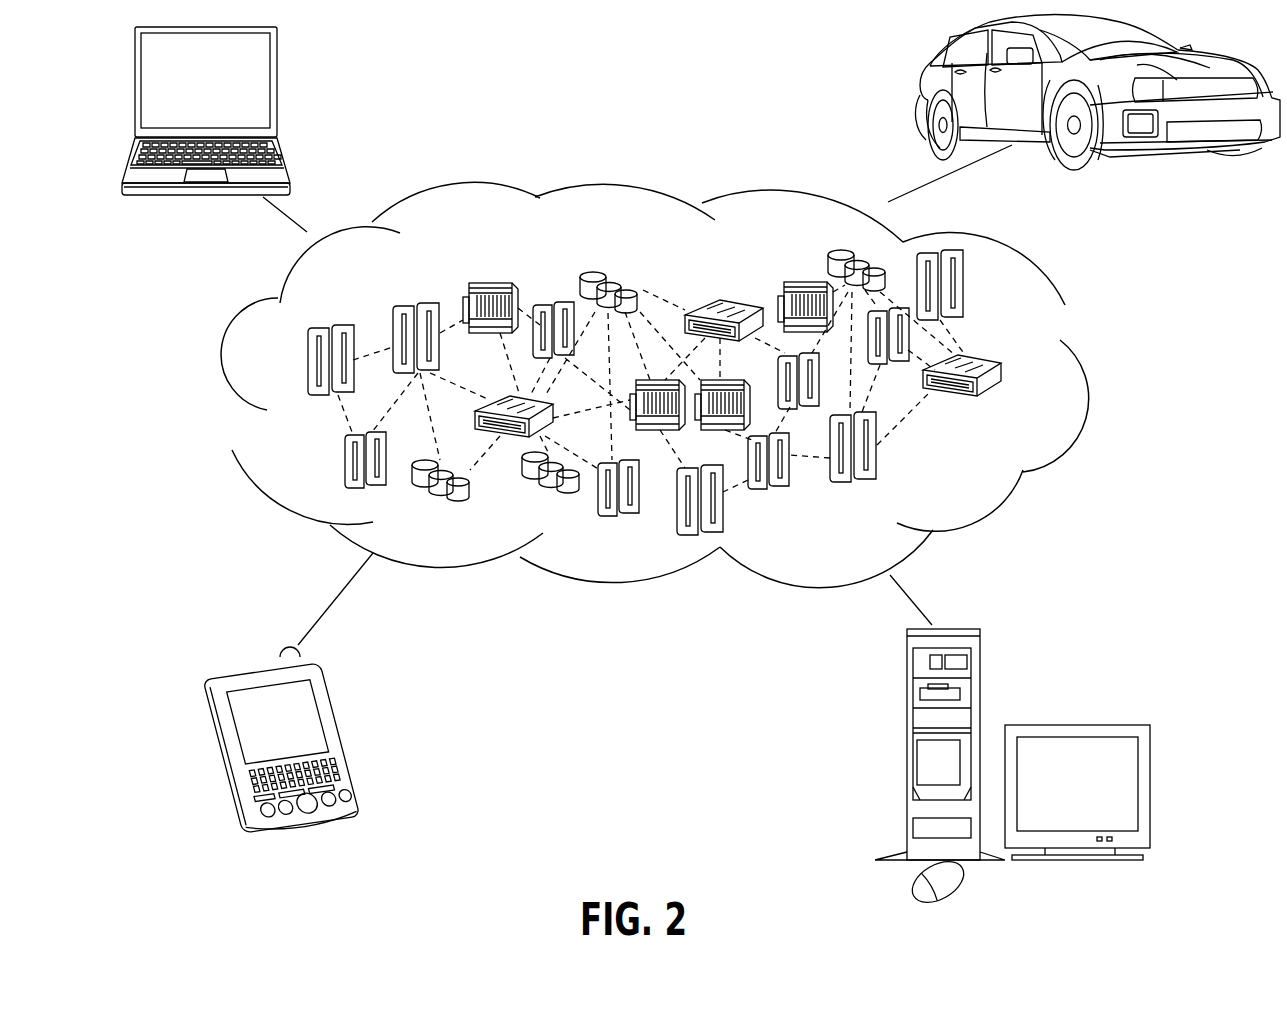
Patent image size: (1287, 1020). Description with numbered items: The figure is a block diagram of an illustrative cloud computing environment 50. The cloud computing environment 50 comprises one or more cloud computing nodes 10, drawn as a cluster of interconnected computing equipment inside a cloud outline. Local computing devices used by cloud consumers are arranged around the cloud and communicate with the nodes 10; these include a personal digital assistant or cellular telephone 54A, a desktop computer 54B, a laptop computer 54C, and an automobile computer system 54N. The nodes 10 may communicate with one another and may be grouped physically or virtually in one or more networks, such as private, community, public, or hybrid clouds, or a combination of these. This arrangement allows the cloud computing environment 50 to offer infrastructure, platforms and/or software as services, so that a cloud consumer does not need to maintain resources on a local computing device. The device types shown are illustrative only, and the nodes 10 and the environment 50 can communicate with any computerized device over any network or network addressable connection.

The cloud computing environment 50 is at (1075, 373).
The cloud computing node 10 is at (992, 478).
The personal digital assistant (PDA) or cellular telephone 54A is at (334, 706).
The desktop computer 54B is at (905, 690).
The laptop computer 54C is at (277, 65).
The automobile computer system 54N is at (921, 83).